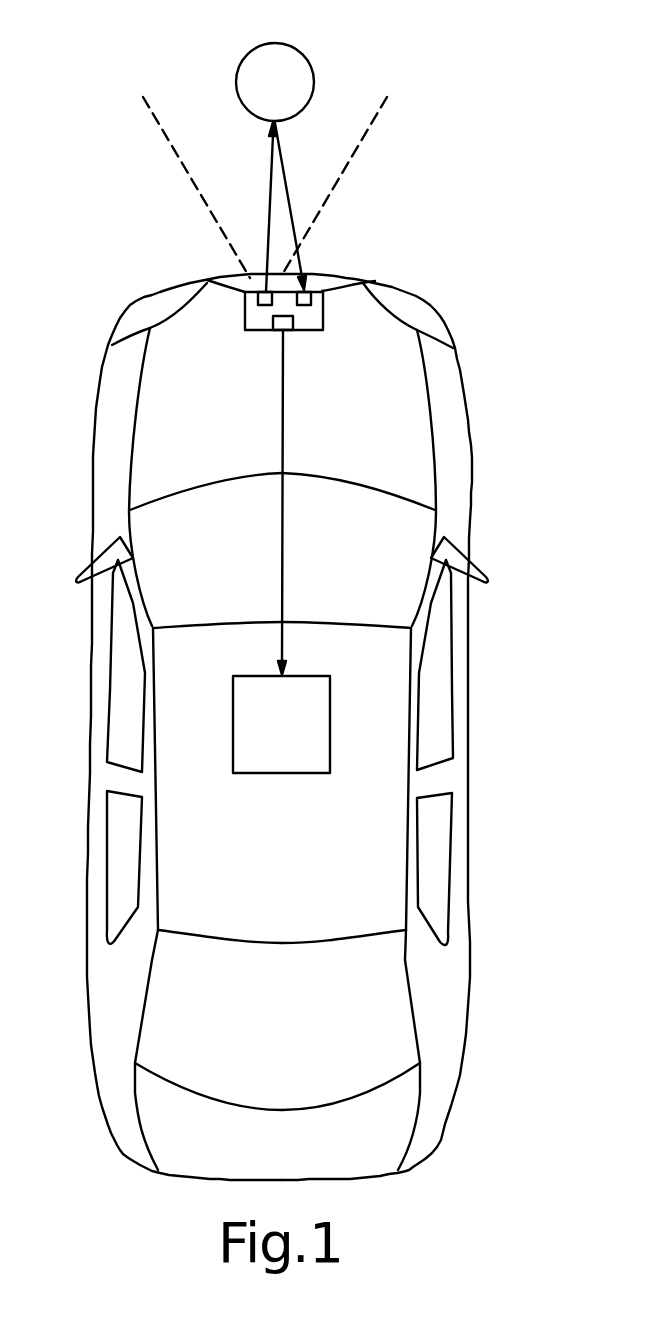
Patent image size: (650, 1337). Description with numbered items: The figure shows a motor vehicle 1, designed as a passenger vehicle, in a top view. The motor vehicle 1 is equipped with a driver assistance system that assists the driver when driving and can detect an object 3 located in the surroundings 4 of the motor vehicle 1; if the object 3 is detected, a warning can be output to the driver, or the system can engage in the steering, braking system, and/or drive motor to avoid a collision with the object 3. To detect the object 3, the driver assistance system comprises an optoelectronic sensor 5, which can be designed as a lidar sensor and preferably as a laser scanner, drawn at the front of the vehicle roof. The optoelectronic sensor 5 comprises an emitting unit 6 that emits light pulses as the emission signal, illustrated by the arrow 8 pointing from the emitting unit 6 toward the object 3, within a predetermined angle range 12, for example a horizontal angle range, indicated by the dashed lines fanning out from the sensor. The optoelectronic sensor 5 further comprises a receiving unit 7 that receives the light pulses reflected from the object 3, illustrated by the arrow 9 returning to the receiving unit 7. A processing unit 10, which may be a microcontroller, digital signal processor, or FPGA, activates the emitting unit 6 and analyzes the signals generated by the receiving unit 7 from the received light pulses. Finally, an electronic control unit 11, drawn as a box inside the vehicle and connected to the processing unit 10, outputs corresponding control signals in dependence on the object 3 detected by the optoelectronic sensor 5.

The motor vehicle 1 is at (143, 268).
The object 3 is at (313, 73).
The surroundings 4 is at (47, 657).
The optoelectronic sensor 5 is at (323, 305).
The emitting unit 6 is at (258, 303).
The receiving unit 7 is at (310, 290).
The arrow 8 is at (267, 199).
The arrow 9 is at (287, 177).
The processing unit 10 is at (283, 325).
The electronic control unit 11 is at (317, 727).
The predetermined angle range 12 is at (165, 135).